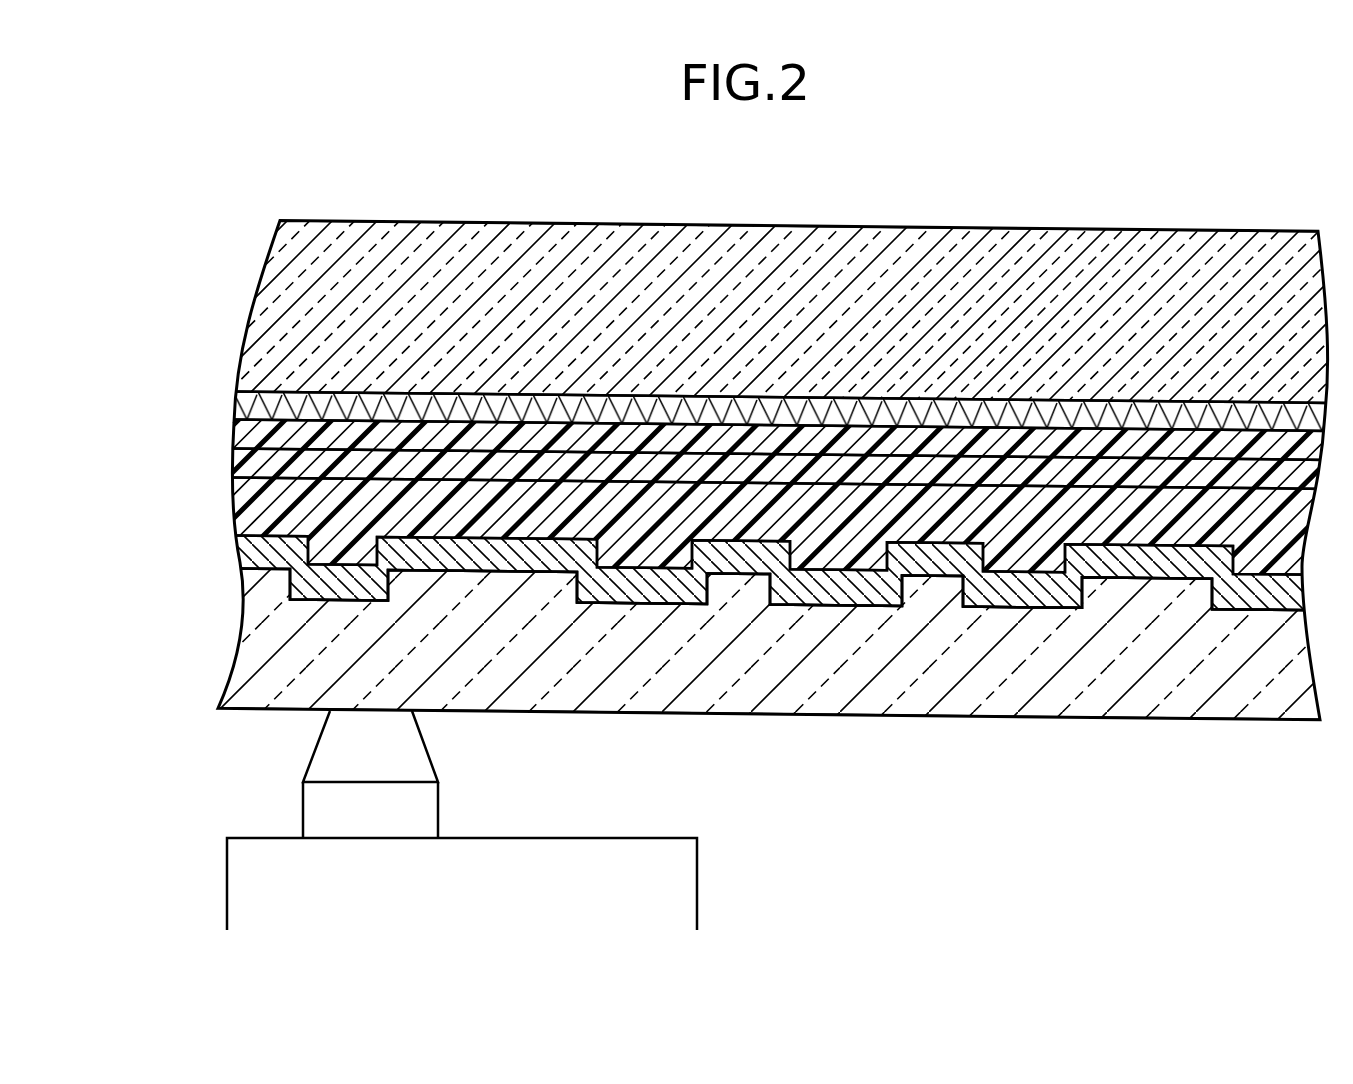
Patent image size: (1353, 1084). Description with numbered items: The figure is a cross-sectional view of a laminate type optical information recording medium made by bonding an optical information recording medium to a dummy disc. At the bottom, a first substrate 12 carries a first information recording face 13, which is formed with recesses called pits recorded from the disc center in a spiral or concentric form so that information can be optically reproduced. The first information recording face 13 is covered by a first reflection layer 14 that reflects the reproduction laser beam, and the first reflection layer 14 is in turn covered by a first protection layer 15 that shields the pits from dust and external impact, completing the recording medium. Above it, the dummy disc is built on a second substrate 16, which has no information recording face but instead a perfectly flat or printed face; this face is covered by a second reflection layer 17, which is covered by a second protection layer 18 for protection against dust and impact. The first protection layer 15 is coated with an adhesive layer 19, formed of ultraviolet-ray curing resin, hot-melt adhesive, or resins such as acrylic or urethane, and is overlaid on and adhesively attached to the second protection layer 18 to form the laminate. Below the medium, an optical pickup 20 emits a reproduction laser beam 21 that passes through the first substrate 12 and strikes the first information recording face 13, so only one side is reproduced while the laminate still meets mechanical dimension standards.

The first substrate 12 is at (1090, 657).
The first information recording face 13 is at (1027, 608).
The first reflection layer 14 is at (928, 560).
The first protection layer 15 is at (556, 524).
The second substrate 16 is at (1057, 258).
The second reflection layer 17 is at (693, 420).
The second protection layer 18 is at (393, 433).
The adhesive layer 19 is at (268, 461).
The optical pickup 20 is at (227, 880).
The reproduction laser beam 21 is at (417, 760).